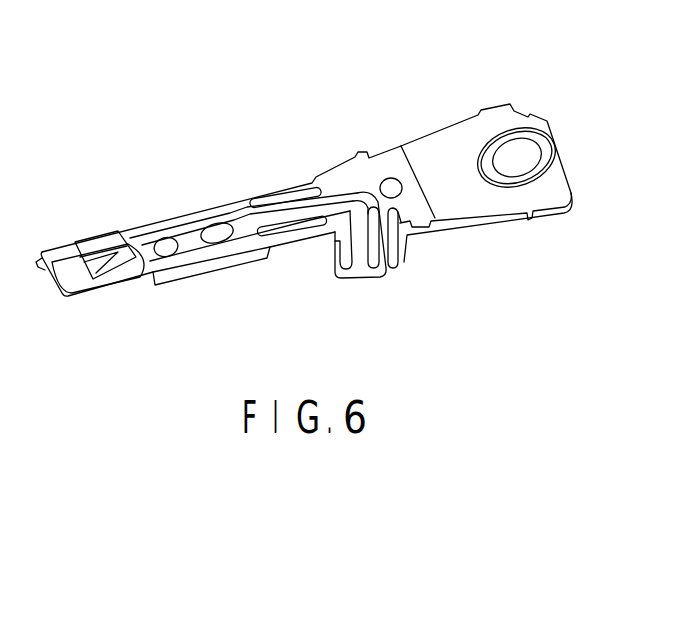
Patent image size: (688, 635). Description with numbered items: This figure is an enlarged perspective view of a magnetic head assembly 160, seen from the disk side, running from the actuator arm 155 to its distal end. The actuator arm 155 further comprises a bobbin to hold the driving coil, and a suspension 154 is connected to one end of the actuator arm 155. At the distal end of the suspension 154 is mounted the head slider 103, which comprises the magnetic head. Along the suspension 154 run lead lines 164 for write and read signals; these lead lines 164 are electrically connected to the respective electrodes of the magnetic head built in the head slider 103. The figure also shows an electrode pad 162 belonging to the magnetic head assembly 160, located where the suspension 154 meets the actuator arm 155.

The magnetic head assembly 160 is at (168, 103).
The suspension 154 is at (238, 203).
The actuator arm 155 is at (495, 200).
The electrode pad 162 is at (378, 270).
The lead lines 164 is at (190, 256).
The head slider 103 is at (95, 240).